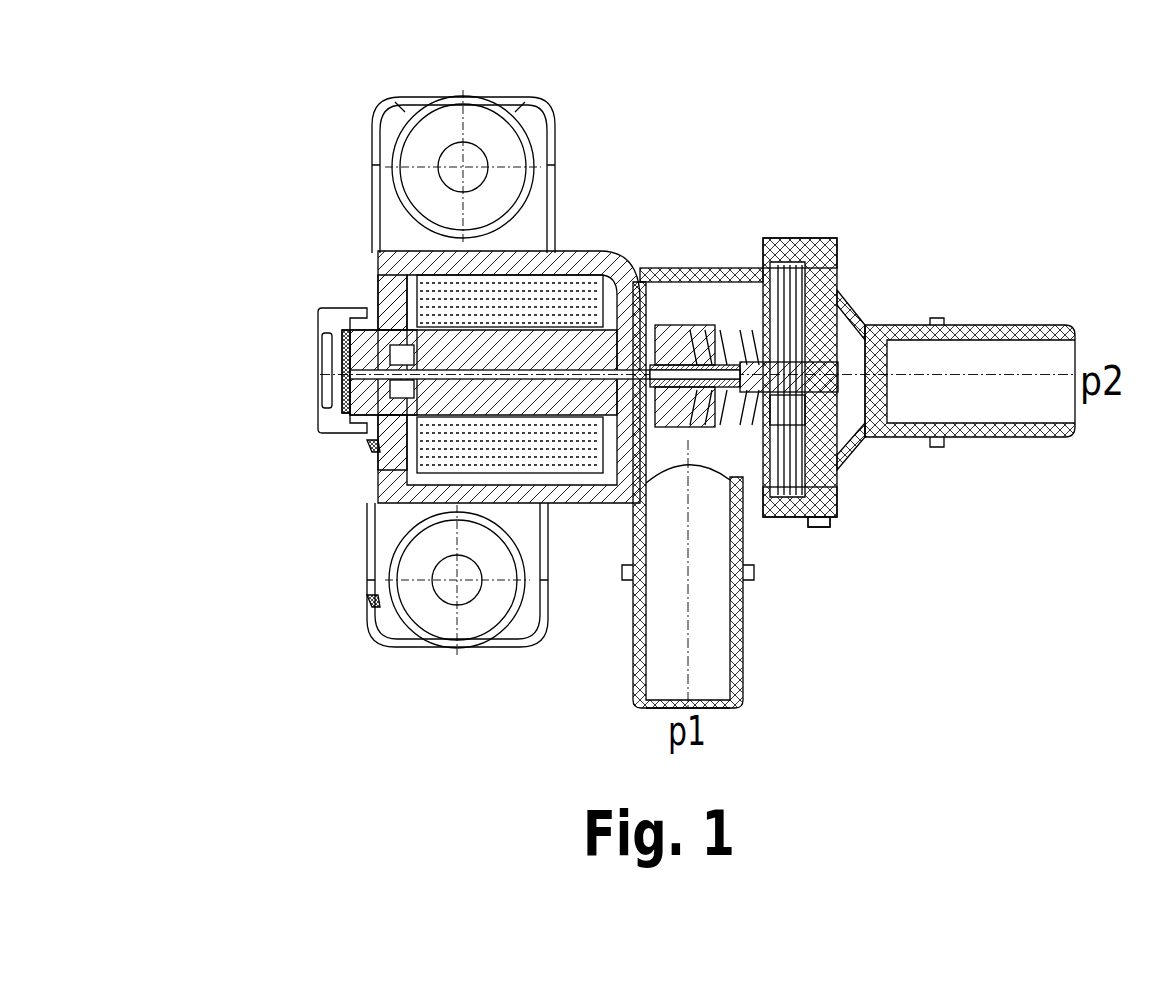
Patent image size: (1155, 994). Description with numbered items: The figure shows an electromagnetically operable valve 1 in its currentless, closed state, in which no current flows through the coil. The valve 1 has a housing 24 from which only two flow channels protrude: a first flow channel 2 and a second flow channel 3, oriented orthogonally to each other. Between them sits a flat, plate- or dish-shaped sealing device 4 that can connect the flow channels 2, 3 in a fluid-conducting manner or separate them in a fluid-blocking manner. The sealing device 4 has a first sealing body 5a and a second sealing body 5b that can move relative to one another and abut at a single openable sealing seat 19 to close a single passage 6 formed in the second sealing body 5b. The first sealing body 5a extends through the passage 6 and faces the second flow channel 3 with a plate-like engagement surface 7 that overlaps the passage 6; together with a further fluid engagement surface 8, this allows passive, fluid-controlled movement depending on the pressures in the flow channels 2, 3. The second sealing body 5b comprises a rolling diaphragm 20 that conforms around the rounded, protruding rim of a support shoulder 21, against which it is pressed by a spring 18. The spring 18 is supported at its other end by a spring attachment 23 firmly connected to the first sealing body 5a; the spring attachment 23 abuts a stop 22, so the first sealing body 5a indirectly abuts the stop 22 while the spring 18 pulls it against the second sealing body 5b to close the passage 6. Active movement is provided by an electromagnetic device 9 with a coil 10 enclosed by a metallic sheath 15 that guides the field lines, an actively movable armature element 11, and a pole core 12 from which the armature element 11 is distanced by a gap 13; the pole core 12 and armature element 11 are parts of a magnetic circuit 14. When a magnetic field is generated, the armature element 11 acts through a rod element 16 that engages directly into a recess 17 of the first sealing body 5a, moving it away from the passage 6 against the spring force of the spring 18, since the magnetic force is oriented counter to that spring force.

The valve 1 is at (365, 115).
The first flow channel 2 is at (680, 613).
The second flow channel 3 is at (990, 378).
The sealing device 4 is at (818, 325).
The first sealing body 5a is at (845, 458).
The second sealing body 5b is at (775, 273).
The passage 6 is at (833, 305).
The plate-like engagement surface 7 is at (830, 368).
The fluid engagement surface 8 is at (800, 412).
The electromagnetic device 9 is at (368, 607).
The coil 10 is at (432, 297).
The armature element 11 is at (342, 392).
The pole core 12 is at (493, 393).
The gap 13 is at (435, 412).
The magnetic circuit 14 is at (375, 450).
The metallic sheath 15 is at (440, 263).
The rod element 16 is at (355, 375).
The recess 17 is at (720, 345).
The spring 18 is at (728, 345).
The sealing seat 19 is at (808, 330).
The rolling diaphragm 20 is at (798, 257).
The support shoulder 21 is at (833, 512).
The stop 22 is at (655, 330).
The spring attachment 23 is at (670, 345).
The housing 24 is at (320, 320).